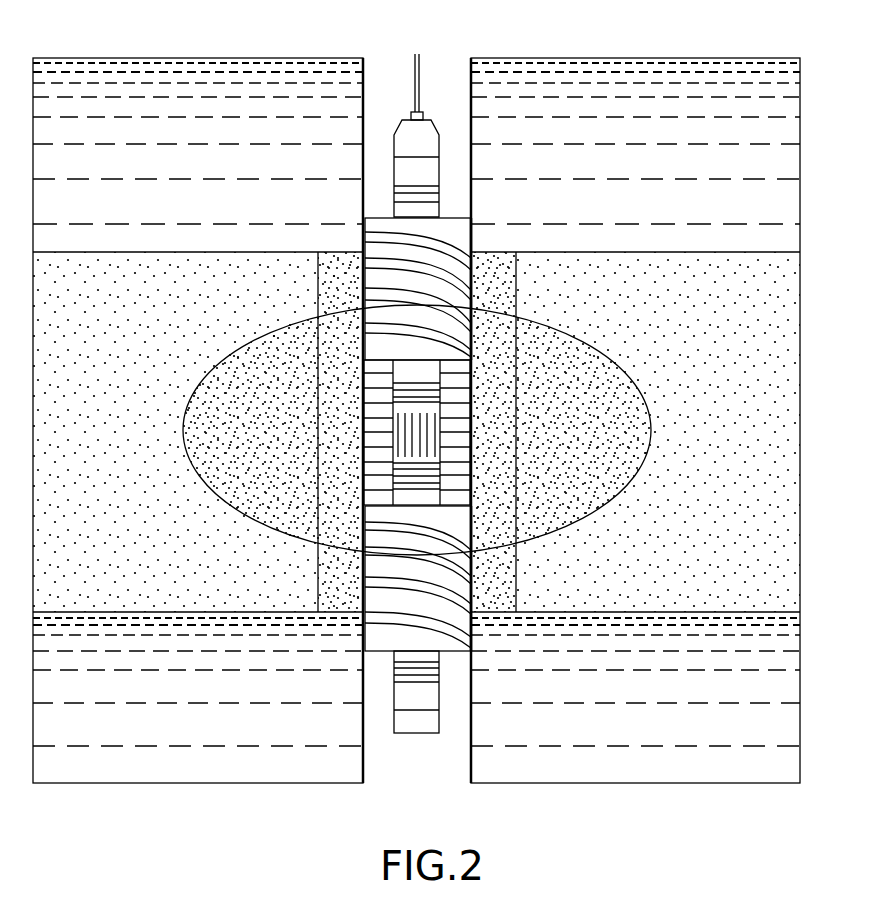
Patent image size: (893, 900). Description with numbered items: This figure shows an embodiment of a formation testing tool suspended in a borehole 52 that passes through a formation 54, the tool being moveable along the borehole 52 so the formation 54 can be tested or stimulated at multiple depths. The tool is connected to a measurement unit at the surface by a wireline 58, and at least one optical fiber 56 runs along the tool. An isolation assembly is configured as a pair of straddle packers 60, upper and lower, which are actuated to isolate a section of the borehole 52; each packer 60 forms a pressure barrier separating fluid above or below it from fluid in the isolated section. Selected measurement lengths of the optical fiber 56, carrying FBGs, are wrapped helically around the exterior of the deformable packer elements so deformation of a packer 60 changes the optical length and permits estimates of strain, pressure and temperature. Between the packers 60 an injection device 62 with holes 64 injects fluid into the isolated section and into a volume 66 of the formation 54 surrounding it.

The borehole 52 is at (471, 765).
The formation 54 is at (785, 437).
The optical fiber 56 is at (400, 290).
The wireline 58 is at (419, 86).
The straddle packers 60 is at (478, 232).
The injection device 62 is at (438, 400).
The holes 64 is at (405, 430).
The volume 66 is at (613, 477).